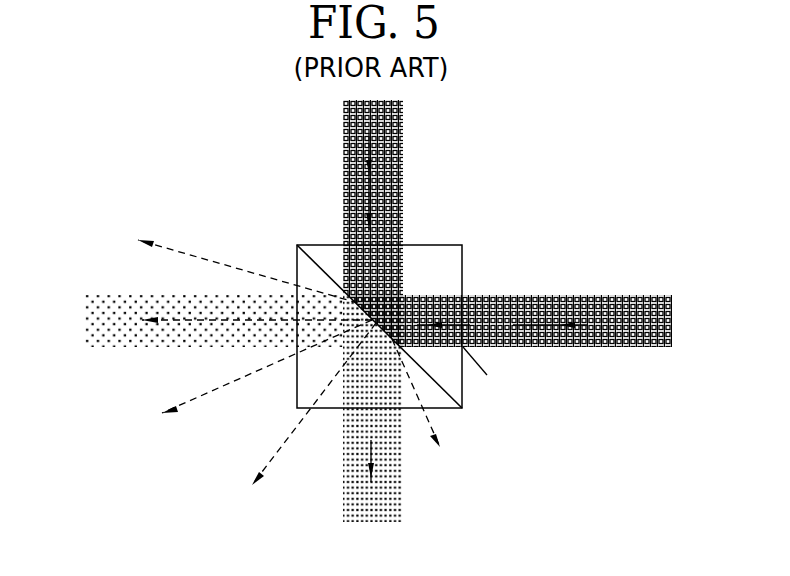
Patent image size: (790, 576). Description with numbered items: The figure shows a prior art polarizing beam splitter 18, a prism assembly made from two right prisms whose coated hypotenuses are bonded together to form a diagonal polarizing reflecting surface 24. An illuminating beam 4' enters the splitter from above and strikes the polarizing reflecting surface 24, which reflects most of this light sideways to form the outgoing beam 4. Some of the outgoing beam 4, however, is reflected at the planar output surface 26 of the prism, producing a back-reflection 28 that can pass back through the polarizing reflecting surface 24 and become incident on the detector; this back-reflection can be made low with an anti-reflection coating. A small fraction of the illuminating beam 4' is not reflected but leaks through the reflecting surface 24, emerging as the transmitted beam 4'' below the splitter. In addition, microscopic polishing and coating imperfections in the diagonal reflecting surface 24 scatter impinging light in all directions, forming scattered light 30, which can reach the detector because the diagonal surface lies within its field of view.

The outgoing beam 4 is at (510, 345).
The illuminating beam 4' is at (396, 225).
The transmitted light beam 4'' is at (400, 406).
The polarizing beam splitter 18 is at (321, 262).
The polarizing reflecting surface 24 is at (447, 390).
The planar surface 26 is at (462, 268).
The back-reflection 28 is at (113, 302).
The scattered light 30 is at (198, 410).